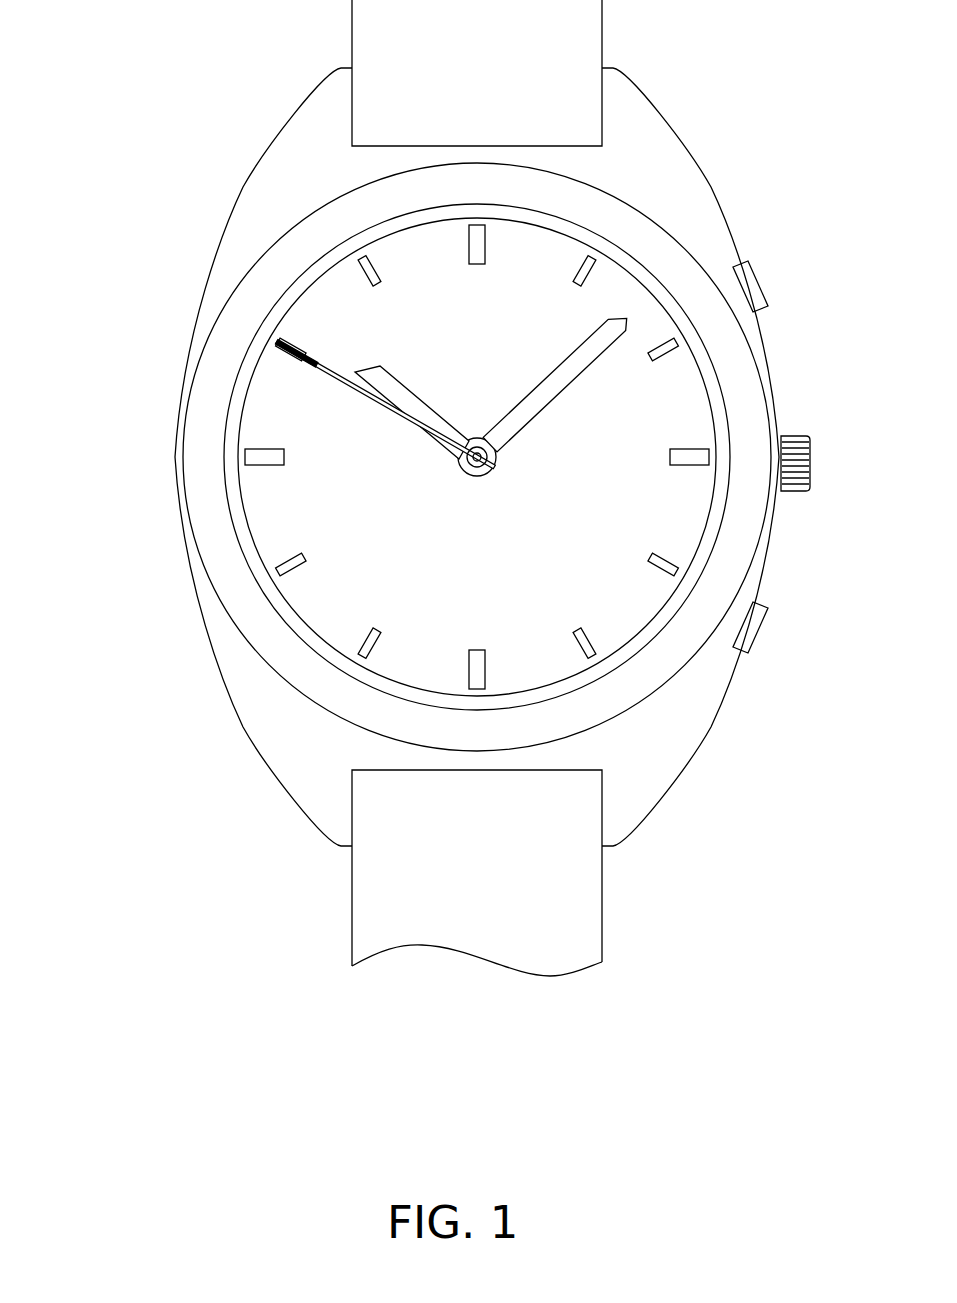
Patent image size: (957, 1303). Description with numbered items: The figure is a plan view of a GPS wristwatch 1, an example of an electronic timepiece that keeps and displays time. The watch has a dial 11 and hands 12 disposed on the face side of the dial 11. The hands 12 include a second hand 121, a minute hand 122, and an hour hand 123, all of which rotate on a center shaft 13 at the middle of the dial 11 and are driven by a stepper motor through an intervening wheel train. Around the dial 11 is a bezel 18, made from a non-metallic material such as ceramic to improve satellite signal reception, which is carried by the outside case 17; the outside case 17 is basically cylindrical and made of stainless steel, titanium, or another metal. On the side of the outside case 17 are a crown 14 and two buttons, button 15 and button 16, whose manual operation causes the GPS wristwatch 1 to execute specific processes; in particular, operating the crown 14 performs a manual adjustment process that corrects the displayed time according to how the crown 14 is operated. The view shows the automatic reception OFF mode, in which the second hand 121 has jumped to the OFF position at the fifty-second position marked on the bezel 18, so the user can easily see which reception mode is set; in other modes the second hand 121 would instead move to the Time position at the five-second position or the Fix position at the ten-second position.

The GPS wristwatch 1 is at (158, 139).
The dial 11 is at (297, 520).
The hands 12 is at (69, 266).
The second hand 121 is at (333, 372).
The minute hand 122 is at (540, 406).
The hour hand 123 is at (392, 383).
The center shaft 13 is at (478, 455).
The crown 14 is at (810, 462).
The button 15 is at (757, 288).
The button 16 is at (755, 636).
The outside case 17 is at (670, 750).
The bezel 18 is at (290, 670).